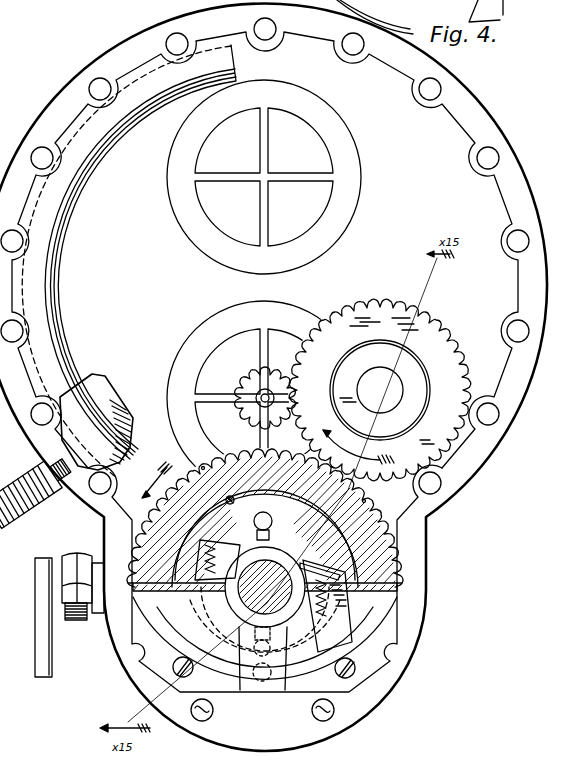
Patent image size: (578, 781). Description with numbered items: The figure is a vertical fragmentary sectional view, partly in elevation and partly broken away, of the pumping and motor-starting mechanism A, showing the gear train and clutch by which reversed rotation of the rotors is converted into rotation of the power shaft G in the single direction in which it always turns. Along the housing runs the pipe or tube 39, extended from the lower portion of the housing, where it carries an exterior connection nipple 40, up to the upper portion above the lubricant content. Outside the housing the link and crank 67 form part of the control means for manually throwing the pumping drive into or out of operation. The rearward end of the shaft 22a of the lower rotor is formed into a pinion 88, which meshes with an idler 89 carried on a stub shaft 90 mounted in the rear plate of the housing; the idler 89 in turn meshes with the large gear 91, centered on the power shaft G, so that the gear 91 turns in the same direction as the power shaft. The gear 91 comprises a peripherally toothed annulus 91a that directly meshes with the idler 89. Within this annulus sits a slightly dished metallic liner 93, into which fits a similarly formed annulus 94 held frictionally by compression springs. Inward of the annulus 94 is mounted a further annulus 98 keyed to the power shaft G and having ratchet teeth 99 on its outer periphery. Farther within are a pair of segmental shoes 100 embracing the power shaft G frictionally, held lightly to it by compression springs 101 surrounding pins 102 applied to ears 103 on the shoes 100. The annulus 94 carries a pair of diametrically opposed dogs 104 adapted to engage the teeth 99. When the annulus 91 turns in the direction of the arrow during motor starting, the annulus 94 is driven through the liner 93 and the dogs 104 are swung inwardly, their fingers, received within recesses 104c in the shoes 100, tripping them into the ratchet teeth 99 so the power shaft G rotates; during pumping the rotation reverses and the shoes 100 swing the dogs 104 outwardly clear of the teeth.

The pumping and motor-starting mechanism A is at (273, 377).
The pipe or tube 39 is at (52, 326).
The exterior connection nipple 40 is at (24, 518).
The link and crank 67 is at (50, 655).
The pinion 88 is at (243, 382).
The shaft of the lower rotor 22a is at (279, 372).
The idler 89 is at (447, 370).
The stub shaft 90 is at (413, 318).
The large gear 91 is at (372, 514).
The peripherally toothed annulus 91a is at (202, 466).
The dogs 104 is at (231, 498).
The recesses in the shoes 104c is at (366, 500).
The annulus with ratchet teeth 98 is at (265, 633).
The ratchet teeth 99 is at (265, 604).
The power shaft G is at (263, 675).
The segmental shoes 100 is at (290, 540).
The ears 103 is at (292, 548).
The compression springs 101 is at (327, 609).
The pins 102 is at (325, 632).
The metallic liner 93 is at (355, 545).
The annulus 94 is at (340, 566).